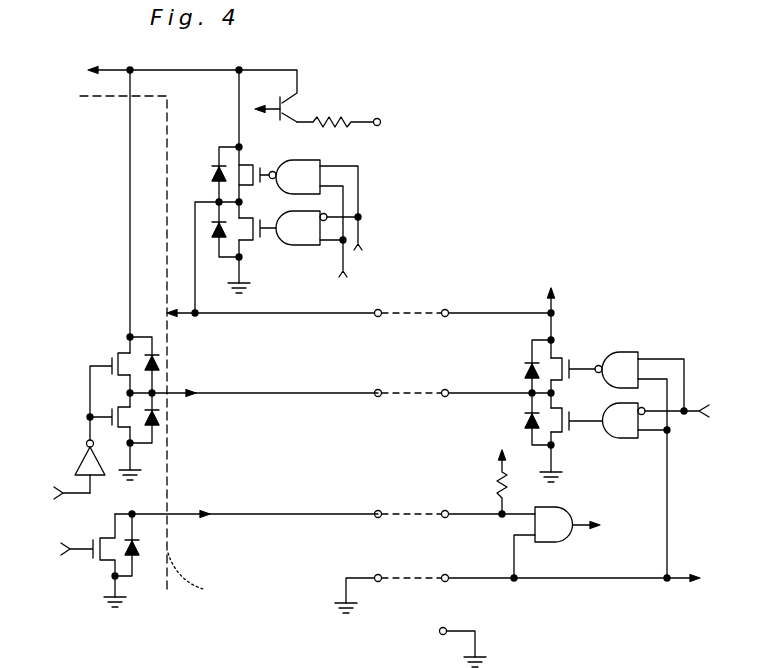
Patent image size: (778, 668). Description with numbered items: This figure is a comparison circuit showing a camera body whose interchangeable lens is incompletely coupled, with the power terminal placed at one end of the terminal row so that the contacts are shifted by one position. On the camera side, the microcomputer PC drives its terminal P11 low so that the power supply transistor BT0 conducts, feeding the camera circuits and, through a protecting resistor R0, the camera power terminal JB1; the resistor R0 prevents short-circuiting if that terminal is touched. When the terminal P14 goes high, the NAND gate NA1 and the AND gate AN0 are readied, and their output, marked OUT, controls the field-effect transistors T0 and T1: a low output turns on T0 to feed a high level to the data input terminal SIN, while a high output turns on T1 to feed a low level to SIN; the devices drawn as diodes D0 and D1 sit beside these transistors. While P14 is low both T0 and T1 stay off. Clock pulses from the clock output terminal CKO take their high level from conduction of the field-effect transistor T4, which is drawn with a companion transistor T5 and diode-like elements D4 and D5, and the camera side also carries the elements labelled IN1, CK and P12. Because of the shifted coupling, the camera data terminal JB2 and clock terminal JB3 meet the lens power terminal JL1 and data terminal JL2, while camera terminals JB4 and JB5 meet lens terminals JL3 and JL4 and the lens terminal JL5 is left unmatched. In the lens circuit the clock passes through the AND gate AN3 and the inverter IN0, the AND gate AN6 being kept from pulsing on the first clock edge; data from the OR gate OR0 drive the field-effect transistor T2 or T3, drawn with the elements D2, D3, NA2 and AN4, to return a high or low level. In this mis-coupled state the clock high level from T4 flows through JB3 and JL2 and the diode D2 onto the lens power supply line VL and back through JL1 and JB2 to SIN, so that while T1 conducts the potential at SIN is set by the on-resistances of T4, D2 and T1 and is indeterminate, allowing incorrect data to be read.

The power supply transistor BT0 is at (288, 101).
The terminal P11 is at (263, 97).
The protecting resistor R0 is at (339, 119).
The camera terminal JB1 is at (381, 122).
The diode D0 is at (199, 174).
The field-effect transistor T0 is at (253, 162).
The NAND gate NA1 is at (303, 160).
The diode D1 is at (214, 232).
The field-effect transistor T1 is at (259, 216).
The AND gate AN0 is at (296, 242).
The output terminal OUT is at (370, 258).
The terminal P14 is at (347, 286).
The data input terminal SIN is at (270, 329).
The camera terminal JB2 is at (382, 305).
The lens terminal JL1 is at (447, 307).
The power supply line VL is at (526, 388).
The field-effect transistor T4 is at (110, 360).
The diode D4 is at (160, 365).
The MOS transistor T5 is at (110, 412).
The diode D5 is at (160, 426).
The clock output terminal CKO is at (254, 406).
The camera terminal JB3 is at (378, 388).
The lens terminal JL2 is at (445, 388).
The inverter IN1 is at (86, 444).
The clock input terminal CK is at (52, 492).
The terminal pin P12 is at (219, 540).
The microcomputer PC is at (201, 576).
The jumper terminal JB4' JB4 is at (378, 510).
The lens terminal JL3 is at (445, 510).
The AND gate AN3 is at (547, 537).
The inverter IN0 is at (613, 526).
The AND gate AN6 is at (613, 536).
The jumper terminal JB5' JB5 is at (378, 574).
The jumper terminal JL4' JL4 is at (445, 574).
The jumper terminal JL5' JL5 is at (446, 627).
The field-effect transistor T2 is at (576, 355).
The diode D2 is at (521, 366).
The field-effect transistor T3 is at (576, 410).
The diode D3 is at (521, 419).
The NAND gate NA2 is at (625, 352).
The AND gate AN4 is at (622, 439).
The OR gate OR0 is at (711, 401).